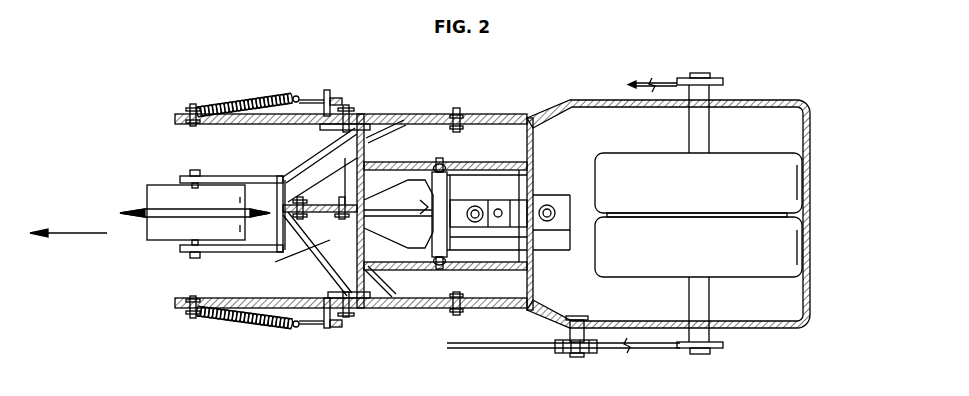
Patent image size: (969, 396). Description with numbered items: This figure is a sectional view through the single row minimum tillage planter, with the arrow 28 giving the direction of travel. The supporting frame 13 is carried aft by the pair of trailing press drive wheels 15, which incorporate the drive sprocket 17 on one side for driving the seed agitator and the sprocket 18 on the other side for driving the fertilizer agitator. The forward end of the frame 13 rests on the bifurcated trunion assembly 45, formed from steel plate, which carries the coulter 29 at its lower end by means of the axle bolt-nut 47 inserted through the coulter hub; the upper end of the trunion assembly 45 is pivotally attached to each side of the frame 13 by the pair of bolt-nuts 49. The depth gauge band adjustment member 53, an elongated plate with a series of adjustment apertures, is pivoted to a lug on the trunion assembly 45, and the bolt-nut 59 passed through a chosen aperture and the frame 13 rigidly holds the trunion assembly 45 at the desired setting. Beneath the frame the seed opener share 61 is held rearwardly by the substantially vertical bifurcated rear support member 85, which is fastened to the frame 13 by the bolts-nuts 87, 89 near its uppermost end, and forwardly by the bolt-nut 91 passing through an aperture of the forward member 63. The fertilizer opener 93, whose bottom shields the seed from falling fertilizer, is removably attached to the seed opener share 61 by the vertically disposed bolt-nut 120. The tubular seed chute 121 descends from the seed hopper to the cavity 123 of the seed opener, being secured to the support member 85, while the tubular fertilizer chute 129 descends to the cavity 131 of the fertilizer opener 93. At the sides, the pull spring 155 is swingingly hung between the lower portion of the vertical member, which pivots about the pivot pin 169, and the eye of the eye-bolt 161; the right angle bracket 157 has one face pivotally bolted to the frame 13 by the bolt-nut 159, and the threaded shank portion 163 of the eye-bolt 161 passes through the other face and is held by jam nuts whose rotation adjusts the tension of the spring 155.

The supporting frame 13 is at (795, 100).
The trailing press drive wheels 15 is at (770, 184).
The drive sprocket 17 is at (717, 353).
The sprocket 18 is at (715, 80).
The arrow 28 is at (72, 233).
The coulter 29 is at (157, 195).
The bifurcated trunion assembly 45 is at (380, 138).
The axle bolt-nut 47 is at (193, 180).
The bolt-nuts 49 is at (458, 110).
The depth gauge band adjustment member 53 is at (310, 215).
The bolt-nut 59 is at (299, 198).
The seed opener share 61 is at (402, 178).
The forward member 63 is at (413, 233).
The bifurcated rear support member 85 is at (462, 210).
The bolt-nut 87 is at (440, 172).
The bolt-nut 89 is at (440, 268).
The bolt-nut 91 is at (345, 200).
The fertilizer opener 93 is at (565, 190).
The bolt-nut 120 is at (500, 218).
The seed chute 121 is at (524, 200).
The cavity 123 is at (517, 175).
The fertilizer chute 129 is at (549, 208).
The cavity 131 is at (541, 210).
The pull spring 155 is at (250, 98).
The right angle bracket 157 is at (328, 90).
The bolt-nut 159 is at (348, 108).
The eye-bolt 161 is at (322, 98).
The threaded shank portion 163 is at (340, 98).
The pivot pin 169 is at (192, 104).